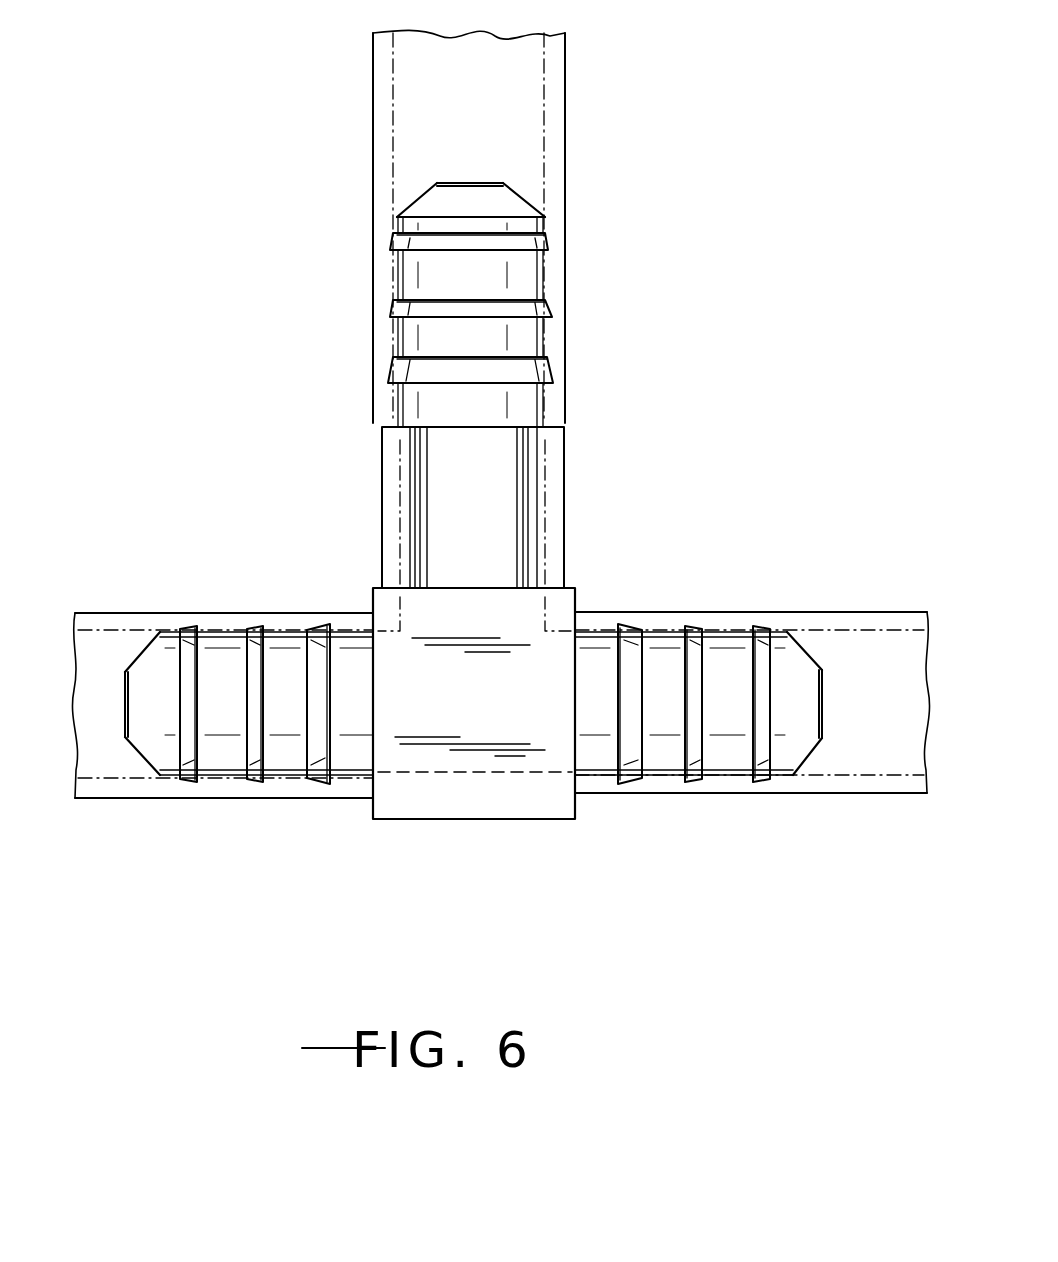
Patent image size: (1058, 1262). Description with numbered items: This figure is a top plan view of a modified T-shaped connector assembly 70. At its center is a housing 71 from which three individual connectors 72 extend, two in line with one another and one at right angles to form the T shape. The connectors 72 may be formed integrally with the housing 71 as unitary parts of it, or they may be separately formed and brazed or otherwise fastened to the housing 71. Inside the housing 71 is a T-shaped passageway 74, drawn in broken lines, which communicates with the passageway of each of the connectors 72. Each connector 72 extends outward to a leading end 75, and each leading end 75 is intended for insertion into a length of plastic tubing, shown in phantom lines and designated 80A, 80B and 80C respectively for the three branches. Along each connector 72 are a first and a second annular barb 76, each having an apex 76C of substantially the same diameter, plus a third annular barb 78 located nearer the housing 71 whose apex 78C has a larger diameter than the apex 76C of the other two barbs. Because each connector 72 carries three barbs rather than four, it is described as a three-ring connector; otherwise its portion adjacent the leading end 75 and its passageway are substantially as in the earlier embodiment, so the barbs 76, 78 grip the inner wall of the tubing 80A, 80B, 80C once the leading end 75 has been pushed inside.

The connector assembly 70 is at (427, 820).
The housing 71 is at (480, 713).
The connector 72 is at (548, 278).
The T-shaped passageway 74 is at (474, 770).
The leading end 75 is at (453, 183).
The annular barb 76 is at (185, 628).
The apex 76C is at (190, 627).
The third annular barb 78 is at (318, 628).
The apex 78C is at (330, 625).
The plastic tubing 80A is at (243, 797).
The plastic tubing 80B is at (705, 797).
The plastic tubing 80C is at (568, 123).